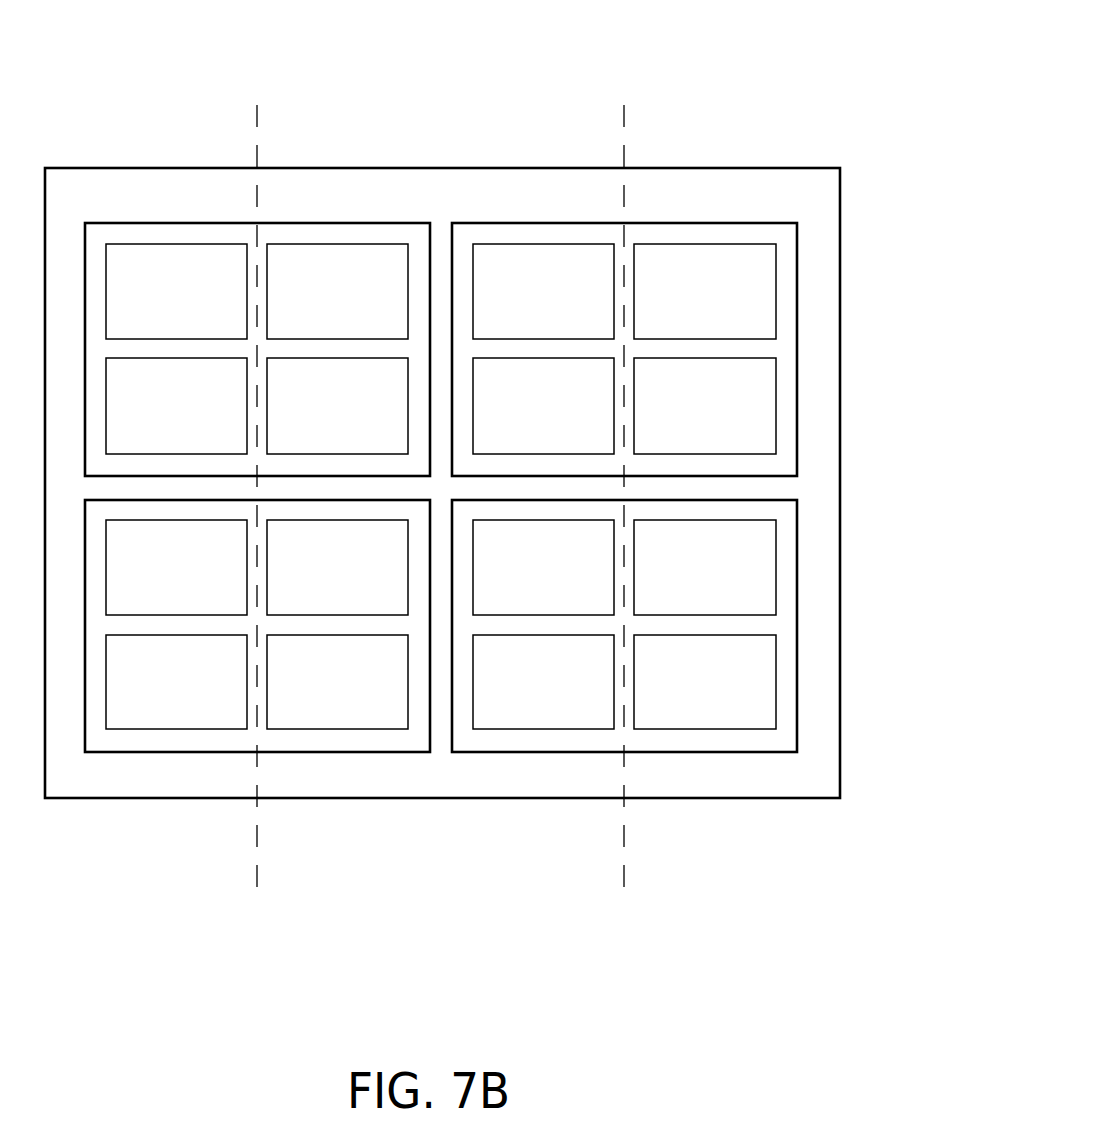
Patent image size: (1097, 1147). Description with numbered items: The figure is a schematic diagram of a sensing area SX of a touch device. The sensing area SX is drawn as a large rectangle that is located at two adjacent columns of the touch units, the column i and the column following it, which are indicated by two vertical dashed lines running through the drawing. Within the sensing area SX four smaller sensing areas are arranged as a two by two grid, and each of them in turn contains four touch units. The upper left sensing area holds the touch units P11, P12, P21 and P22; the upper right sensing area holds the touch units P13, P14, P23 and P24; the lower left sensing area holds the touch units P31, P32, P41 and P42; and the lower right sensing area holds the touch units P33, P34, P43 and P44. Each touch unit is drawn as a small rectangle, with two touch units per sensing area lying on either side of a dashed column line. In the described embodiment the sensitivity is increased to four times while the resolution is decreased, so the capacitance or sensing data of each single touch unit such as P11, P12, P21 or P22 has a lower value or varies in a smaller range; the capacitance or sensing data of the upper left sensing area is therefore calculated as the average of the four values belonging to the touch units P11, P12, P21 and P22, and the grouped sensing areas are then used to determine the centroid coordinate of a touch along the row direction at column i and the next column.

The sensing area SX is at (763, 90).
The touch unit P11 is at (198, 310).
The touch unit P12 is at (359, 310).
The touch unit P13 is at (565, 310).
The touch unit P14 is at (727, 310).
The touch unit P21 is at (198, 424).
The touch unit P22 is at (359, 424).
The touch unit P23 is at (565, 424).
The touch unit P24 is at (727, 424).
The touch unit P31 is at (198, 586).
The touch unit P32 is at (359, 586).
The touch unit P33 is at (565, 586).
The touch unit P34 is at (727, 586).
The touch unit P41 is at (198, 700).
The touch unit P42 is at (359, 700).
The touch unit P43 is at (565, 700).
The touch unit P44 is at (727, 700).
The column i is at (254, 520).